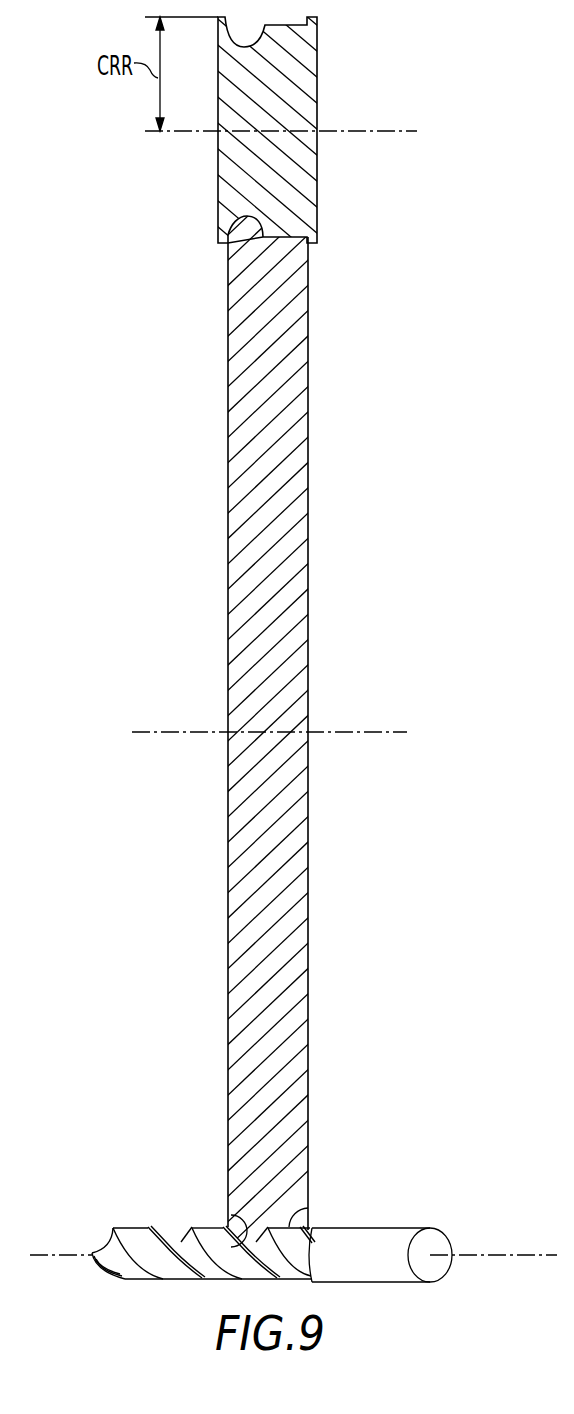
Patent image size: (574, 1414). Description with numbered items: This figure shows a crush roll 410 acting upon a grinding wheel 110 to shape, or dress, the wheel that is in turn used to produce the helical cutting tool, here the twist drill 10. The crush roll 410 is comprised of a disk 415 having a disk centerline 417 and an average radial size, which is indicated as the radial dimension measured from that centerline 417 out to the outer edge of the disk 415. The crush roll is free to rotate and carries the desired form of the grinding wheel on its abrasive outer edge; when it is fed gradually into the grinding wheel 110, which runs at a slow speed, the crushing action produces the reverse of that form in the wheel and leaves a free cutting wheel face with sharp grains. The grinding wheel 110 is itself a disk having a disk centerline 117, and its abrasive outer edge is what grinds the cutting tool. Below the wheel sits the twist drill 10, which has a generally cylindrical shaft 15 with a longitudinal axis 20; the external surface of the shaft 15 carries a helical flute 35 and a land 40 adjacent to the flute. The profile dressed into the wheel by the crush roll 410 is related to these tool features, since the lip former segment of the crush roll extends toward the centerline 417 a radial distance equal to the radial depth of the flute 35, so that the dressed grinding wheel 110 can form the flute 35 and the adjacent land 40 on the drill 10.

The twist drill 10 is at (408, 1127).
The shaft 15 is at (375, 1228).
The longitudinal axis 20 is at (477, 1255).
The flute 35 is at (229, 1216).
The land 40 is at (297, 1216).
The grinding wheel 110 is at (308, 482).
The disk centerline 117 is at (198, 730).
The crush roll 410 is at (318, 90).
The disk 415 is at (297, 212).
The disk centerline 417 is at (188, 133).